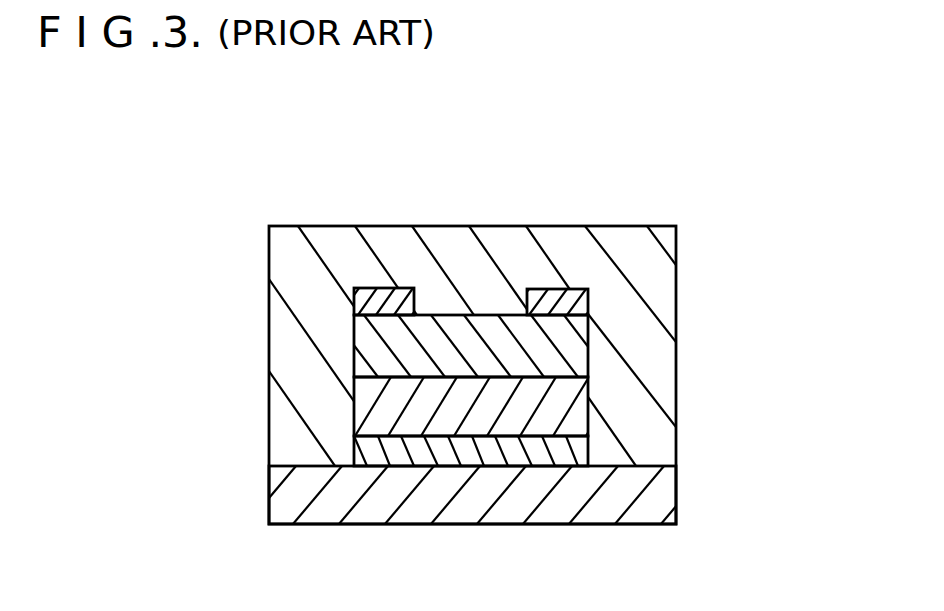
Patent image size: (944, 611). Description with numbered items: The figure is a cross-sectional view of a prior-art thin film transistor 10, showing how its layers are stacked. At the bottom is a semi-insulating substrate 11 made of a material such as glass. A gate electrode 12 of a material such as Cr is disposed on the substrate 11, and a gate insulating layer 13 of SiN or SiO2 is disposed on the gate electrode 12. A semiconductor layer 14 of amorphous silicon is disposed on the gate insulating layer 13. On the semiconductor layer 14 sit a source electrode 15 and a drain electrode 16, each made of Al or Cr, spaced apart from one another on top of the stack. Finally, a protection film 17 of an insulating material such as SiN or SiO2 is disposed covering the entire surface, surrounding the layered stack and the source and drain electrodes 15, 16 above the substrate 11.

The thin film transistor 10 is at (337, 178).
The semi-insulating substrate 11 is at (652, 510).
The gate electrode 12 is at (537, 450).
The gate insulating layer 13 is at (455, 407).
The semiconductor layer 14 is at (578, 362).
The source electrode 15 is at (393, 287).
The drain electrode 16 is at (569, 289).
The protection film 17 is at (295, 365).